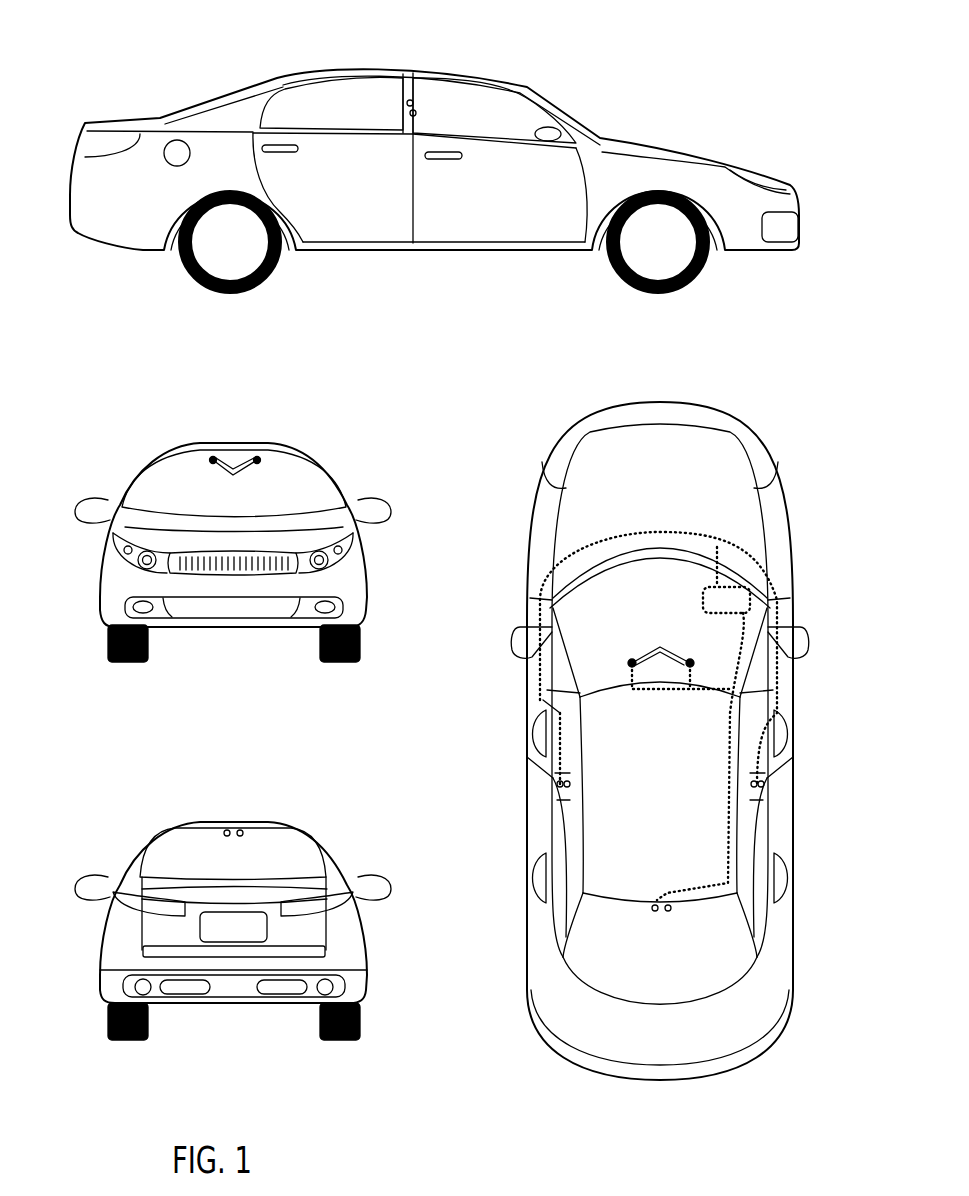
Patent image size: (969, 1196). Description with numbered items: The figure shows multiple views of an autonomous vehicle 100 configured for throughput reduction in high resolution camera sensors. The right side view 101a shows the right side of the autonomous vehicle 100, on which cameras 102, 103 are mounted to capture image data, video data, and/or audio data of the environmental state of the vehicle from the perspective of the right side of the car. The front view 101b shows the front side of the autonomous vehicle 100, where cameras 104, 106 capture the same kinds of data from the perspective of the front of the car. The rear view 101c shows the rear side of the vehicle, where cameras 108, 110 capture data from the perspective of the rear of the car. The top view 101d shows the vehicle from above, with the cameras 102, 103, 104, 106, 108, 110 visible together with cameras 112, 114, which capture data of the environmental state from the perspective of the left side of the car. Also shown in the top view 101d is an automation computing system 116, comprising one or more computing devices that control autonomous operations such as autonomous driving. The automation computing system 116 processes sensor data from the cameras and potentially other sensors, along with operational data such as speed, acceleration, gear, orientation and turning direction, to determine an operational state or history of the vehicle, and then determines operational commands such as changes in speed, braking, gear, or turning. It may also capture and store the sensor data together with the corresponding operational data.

The autonomous vehicle 100 is at (702, 157).
The right side view 101a is at (675, 88).
The front view 101b is at (373, 429).
The rear view 101c is at (338, 814).
The top view 101d is at (815, 476).
The camera 102 is at (417, 113).
The camera 103 is at (414, 103).
The camera 104 is at (213, 457).
The camera 106 is at (257, 457).
The camera 108 is at (227, 830).
The camera 110 is at (240, 830).
The camera 112 is at (559, 788).
The camera 114 is at (567, 790).
The automation computing system 116 is at (735, 588).